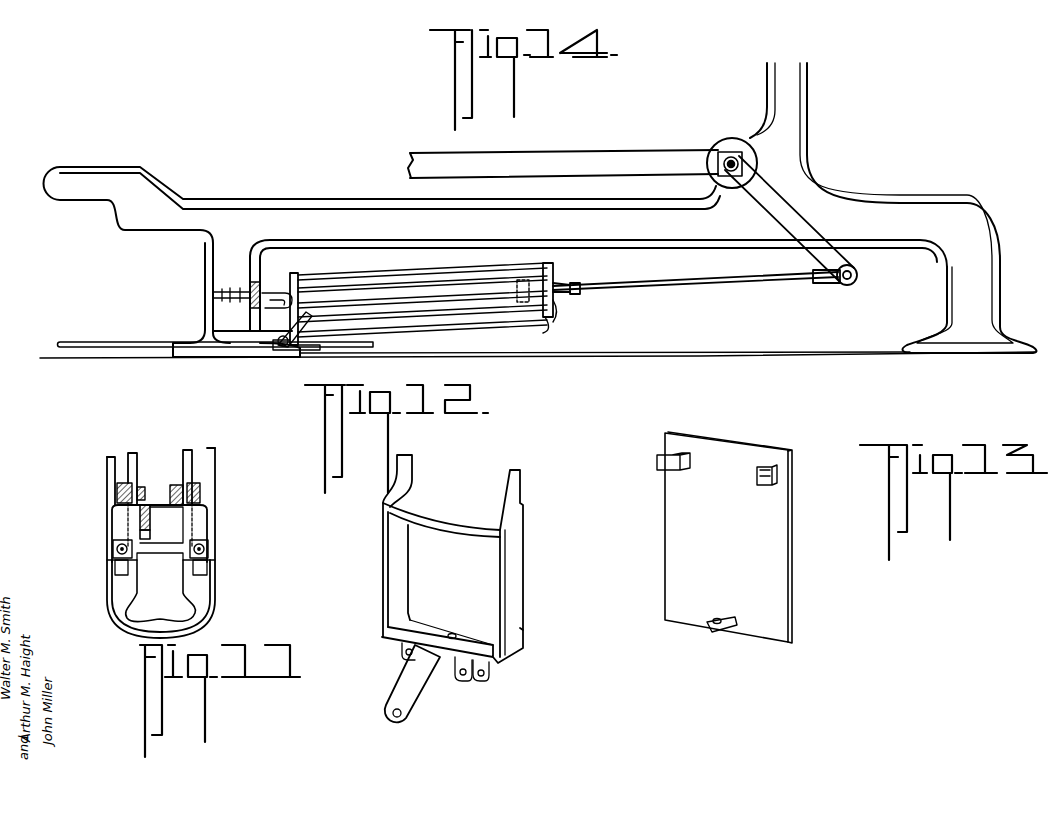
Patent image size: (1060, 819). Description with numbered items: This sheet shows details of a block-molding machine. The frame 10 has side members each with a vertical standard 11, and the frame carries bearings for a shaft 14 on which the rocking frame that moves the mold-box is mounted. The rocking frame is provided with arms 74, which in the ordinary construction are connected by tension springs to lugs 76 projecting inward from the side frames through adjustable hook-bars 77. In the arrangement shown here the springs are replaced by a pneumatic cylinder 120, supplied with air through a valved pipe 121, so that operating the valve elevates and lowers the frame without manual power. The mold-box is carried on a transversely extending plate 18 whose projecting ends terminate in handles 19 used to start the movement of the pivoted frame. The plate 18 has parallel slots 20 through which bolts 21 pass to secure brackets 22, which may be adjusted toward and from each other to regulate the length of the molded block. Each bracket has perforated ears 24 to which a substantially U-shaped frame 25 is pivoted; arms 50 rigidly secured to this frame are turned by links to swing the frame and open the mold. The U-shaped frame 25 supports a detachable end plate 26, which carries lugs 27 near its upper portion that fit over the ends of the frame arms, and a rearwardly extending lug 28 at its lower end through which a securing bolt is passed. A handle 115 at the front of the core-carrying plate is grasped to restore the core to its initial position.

In FIG. 14, the frame 10 is at (496, 262).
In FIG. 14, the vertical standard 11 is at (893, 208).
In FIG. 14, the shaft 14 is at (744, 160).
In FIG. 14, the arms 74 is at (773, 208).
In FIG. 14, the lugs 76 is at (250, 283).
In FIG. 14, the adjustable hook-bars 77 is at (266, 295).
In FIG. 14, the pneumatic cylinder 120 is at (523, 300).
In FIG. 14, the valved pipe 121 is at (146, 348).
In FIG. 11, the plate 18 is at (113, 583).
In FIG. 11, the handles 19 is at (155, 628).
In FIG. 11, the parallel slots 20 is at (118, 457).
In FIG. 11, the bolts 21 is at (115, 550).
In FIG. 11, the brackets 22 is at (120, 525).
In FIG. 11, the perforated ears 24 is at (120, 492).
In FIG. 12, the U-shaped frame 25 is at (508, 558).
In FIG. 11, the U-shaped frame 25 is at (173, 487).
In FIG. 12, the arms 50 is at (413, 685).
In FIG. 11, the arms 50 is at (152, 525).
In FIG. 12, the handle 115 is at (438, 522).
In FIG. 13, the end plate 26 is at (758, 528).
In FIG. 13, the lugs 27 is at (657, 462).
In FIG. 13, the rearwardly-extending lug 28 is at (712, 627).